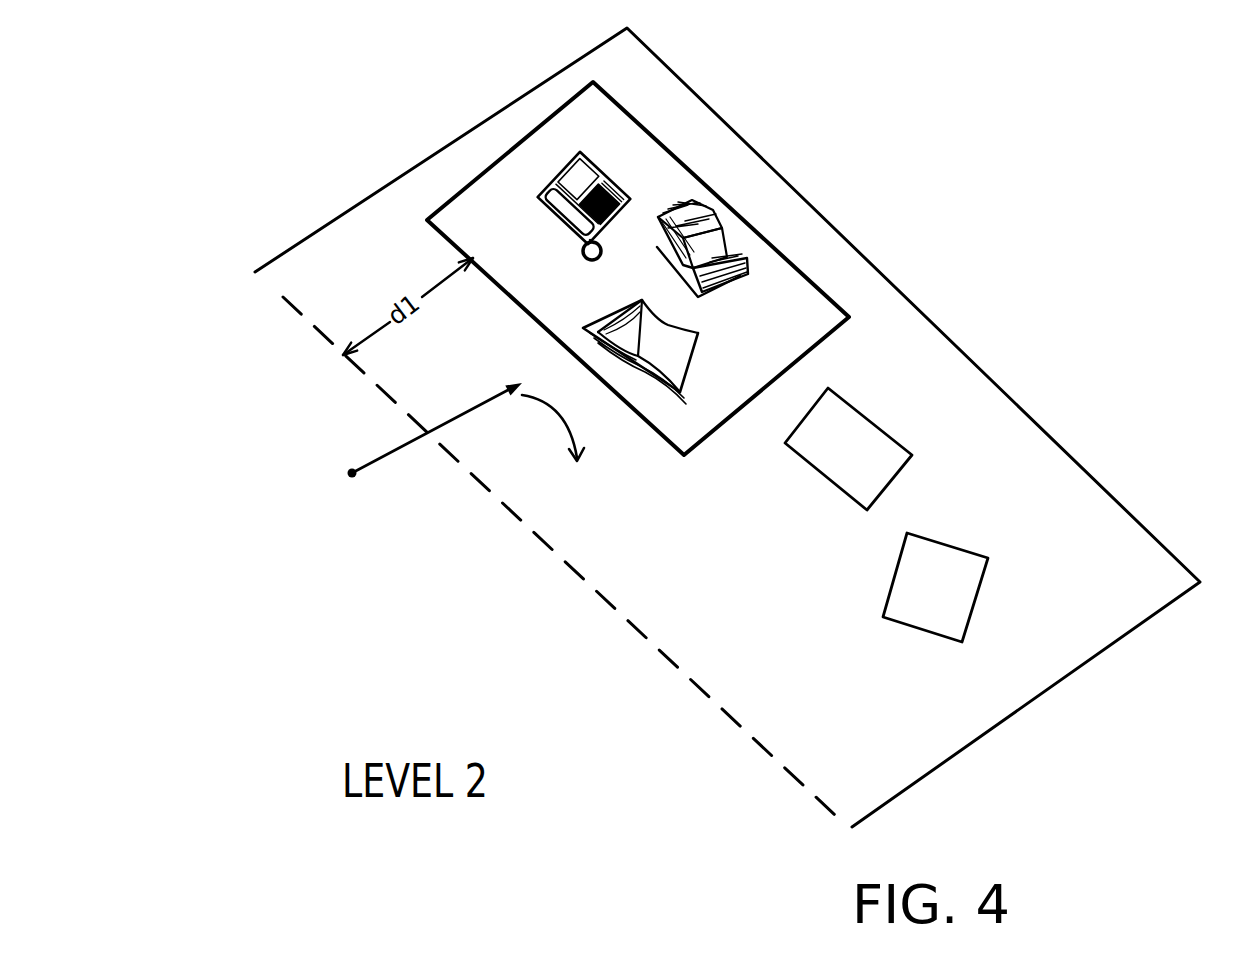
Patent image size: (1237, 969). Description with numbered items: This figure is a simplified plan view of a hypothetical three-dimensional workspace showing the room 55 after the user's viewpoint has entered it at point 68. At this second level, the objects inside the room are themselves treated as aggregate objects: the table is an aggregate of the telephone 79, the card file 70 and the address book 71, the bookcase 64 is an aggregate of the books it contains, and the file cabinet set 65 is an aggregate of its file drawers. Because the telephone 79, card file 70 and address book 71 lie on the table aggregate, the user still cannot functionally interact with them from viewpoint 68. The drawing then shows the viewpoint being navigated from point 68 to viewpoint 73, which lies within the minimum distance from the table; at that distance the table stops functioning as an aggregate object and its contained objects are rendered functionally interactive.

The room 55 is at (345, 263).
The telephone 79 is at (620, 192).
The card file 70 is at (710, 228).
The address book 71 is at (673, 347).
The bookcase 64 is at (858, 408).
The file cabinet set 65 is at (957, 545).
The viewpoint 68 is at (352, 473).
The viewpoint 73 is at (558, 449).